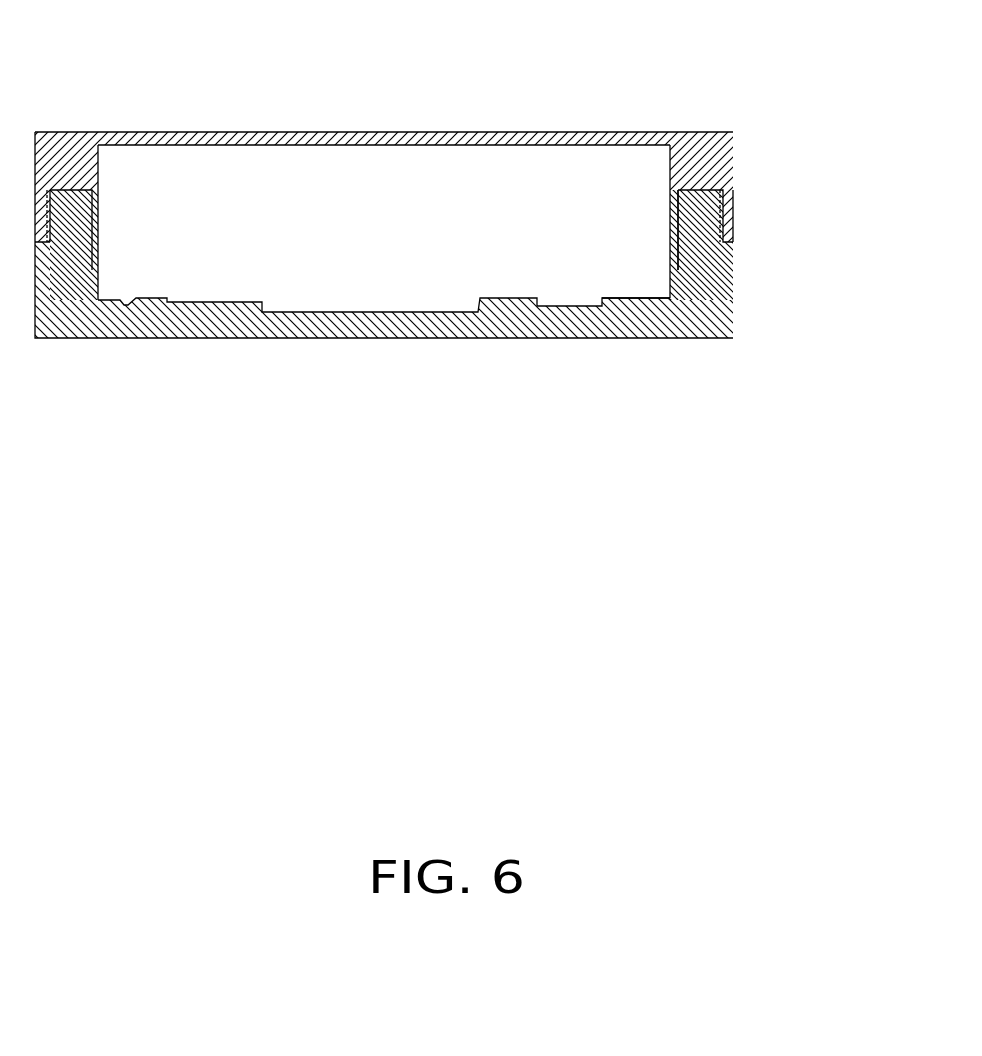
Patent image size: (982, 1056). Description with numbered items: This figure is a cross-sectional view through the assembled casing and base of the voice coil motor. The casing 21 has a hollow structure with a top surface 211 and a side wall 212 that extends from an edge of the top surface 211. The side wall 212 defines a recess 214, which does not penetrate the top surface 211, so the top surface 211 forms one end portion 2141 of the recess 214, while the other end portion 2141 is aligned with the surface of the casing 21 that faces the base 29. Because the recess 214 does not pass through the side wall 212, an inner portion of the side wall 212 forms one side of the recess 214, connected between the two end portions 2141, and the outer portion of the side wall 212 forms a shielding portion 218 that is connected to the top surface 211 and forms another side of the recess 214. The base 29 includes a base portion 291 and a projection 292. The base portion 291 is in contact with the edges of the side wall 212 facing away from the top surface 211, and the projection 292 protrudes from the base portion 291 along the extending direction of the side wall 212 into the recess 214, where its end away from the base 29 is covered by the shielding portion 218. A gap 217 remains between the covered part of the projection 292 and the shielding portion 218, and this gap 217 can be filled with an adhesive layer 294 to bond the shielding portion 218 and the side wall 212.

The casing 21 is at (461, 215).
The top surface 211 is at (385, 132).
The side wall 212 is at (670, 228).
The recess 214 is at (682, 208).
The end portion 2141 is at (673, 297).
The gap 217 is at (723, 191).
The shielding portion 218 is at (733, 200).
The base 29 is at (779, 244).
The base portion 291 is at (690, 320).
The projection 292 is at (700, 240).
The adhesive layer 294 is at (724, 222).